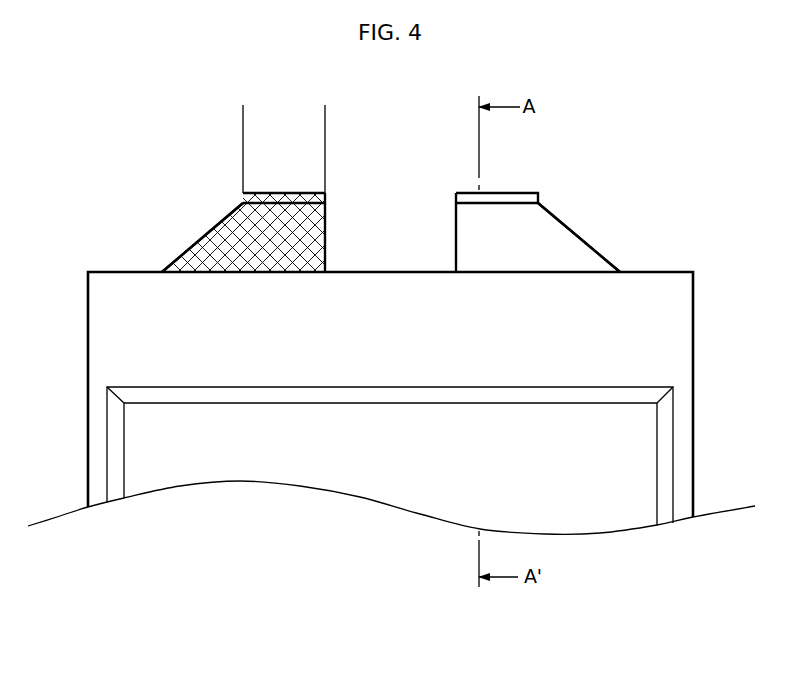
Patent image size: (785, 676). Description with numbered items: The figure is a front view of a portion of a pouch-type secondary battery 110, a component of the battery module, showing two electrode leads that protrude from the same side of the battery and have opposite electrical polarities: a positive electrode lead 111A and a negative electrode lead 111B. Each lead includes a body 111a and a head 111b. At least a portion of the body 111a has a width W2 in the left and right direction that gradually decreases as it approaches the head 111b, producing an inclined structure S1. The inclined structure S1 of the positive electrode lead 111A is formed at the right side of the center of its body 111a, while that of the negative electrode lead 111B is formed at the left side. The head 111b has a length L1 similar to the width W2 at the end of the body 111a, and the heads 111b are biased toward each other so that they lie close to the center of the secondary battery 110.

The pouch-type secondary battery 110 is at (89, 258).
The body 111a is at (230, 228).
The head 111b is at (283, 193).
The positive electrode lead 111A is at (456, 232).
The negative electrode lead 111B is at (327, 231).
The inclined structure S1 is at (188, 248).
The length of head L1 is at (325, 112).
The width of body W2 is at (168, 283).